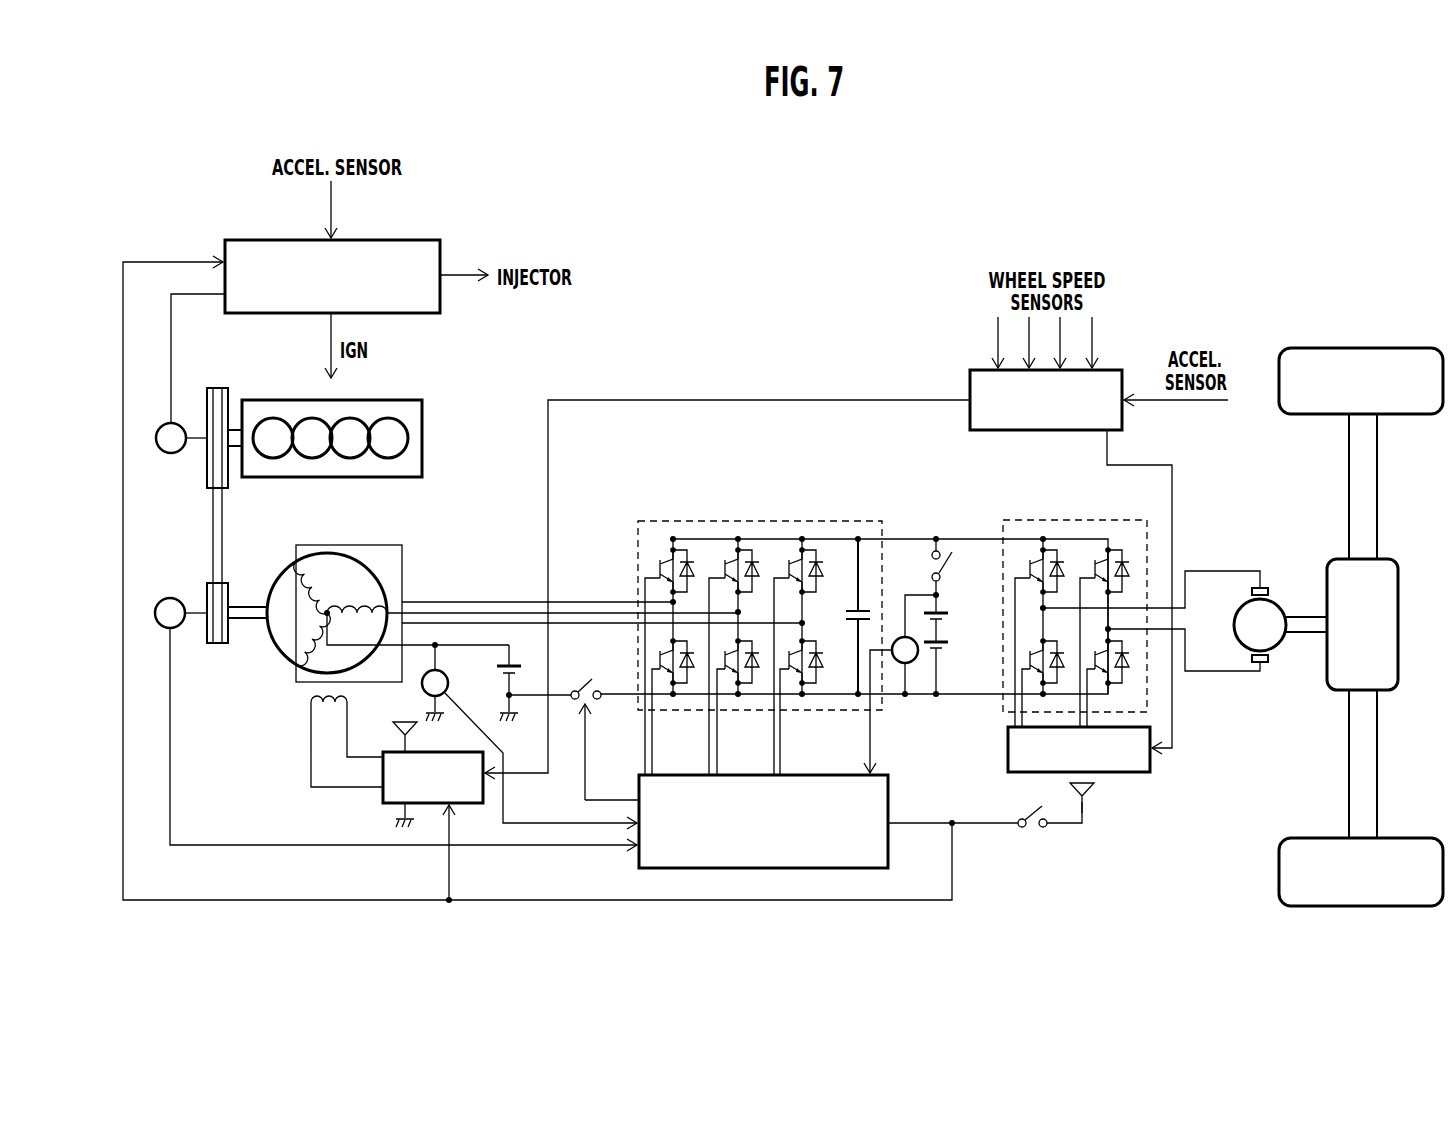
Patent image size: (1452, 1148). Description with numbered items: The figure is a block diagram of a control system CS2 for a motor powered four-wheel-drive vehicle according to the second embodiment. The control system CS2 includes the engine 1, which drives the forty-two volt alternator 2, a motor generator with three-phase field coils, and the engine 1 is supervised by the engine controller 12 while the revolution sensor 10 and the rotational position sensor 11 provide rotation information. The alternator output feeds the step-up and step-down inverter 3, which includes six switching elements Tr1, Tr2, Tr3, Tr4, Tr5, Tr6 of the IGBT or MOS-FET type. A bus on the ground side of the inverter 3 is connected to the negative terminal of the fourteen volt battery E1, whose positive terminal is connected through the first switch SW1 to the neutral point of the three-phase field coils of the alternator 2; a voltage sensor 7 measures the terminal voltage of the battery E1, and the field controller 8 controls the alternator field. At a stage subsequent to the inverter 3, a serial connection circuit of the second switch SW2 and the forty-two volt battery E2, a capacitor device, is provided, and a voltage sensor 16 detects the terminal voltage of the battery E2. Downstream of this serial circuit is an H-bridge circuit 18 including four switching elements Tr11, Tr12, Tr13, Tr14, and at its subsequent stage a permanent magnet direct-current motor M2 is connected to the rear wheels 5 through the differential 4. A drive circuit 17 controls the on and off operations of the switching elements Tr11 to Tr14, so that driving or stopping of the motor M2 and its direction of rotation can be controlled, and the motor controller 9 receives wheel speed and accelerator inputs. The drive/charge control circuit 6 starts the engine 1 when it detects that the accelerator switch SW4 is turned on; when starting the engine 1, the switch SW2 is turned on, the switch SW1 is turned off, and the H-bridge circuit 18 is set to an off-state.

The engine 1 is at (282, 400).
The 42-V alternator 2 is at (282, 572).
The step-up and step-down inverter 3 is at (862, 520).
The differential 4 is at (1398, 600).
The rear wheels 5 is at (1378, 350).
The drive/charge control circuit 6 is at (888, 793).
The voltage sensor 7 is at (448, 682).
The field controller 8 is at (395, 752).
The motor controller 9 is at (1108, 370).
The revolution sensor 10 is at (158, 423).
The rotational position sensor 11 is at (172, 598).
The engine controller 12 is at (249, 240).
The voltage sensor 16 is at (912, 661).
The drive circuit 17 is at (1127, 772).
The H-bridge circuit 18 is at (1062, 518).
The switching element Tr1 is at (667, 544).
The switching element Tr2 is at (732, 544).
The switching element Tr3 is at (796, 544).
The switching element Tr4 is at (668, 705).
The switching element Tr5 is at (733, 705).
The switching element Tr6 is at (798, 705).
The switching element Tr11 is at (1037, 545).
The switching element Tr12 is at (1102, 545).
The switching element Tr13 is at (1028, 658).
The switching element Tr14 is at (1125, 685).
The first switch SW1 is at (585, 680).
The second switch SW2 is at (918, 556).
The accelerator switch SW4 is at (1029, 830).
The 14-V battery E1 is at (521, 669).
The 42-V battery E2 is at (944, 644).
The permanent magnet direct-current motor M2 is at (1283, 605).
The control system CS2 is at (783, 227).